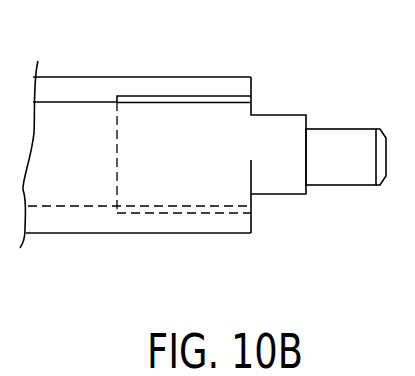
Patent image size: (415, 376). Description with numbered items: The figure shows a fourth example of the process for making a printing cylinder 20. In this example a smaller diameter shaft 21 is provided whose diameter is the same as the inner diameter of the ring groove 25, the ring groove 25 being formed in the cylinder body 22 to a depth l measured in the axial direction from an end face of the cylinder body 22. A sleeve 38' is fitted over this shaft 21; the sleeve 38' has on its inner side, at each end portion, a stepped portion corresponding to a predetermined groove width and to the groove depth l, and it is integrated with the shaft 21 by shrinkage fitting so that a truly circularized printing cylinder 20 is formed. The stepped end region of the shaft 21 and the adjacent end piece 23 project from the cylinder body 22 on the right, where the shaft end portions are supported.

The printing cylinder 20 is at (205, 242).
The shaft 21 is at (275, 187).
The cylinder body 22 is at (67, 115).
The connector pin 23 is at (341, 129).
The ring groove 25 is at (193, 102).
The sleeve 38' is at (184, 114).